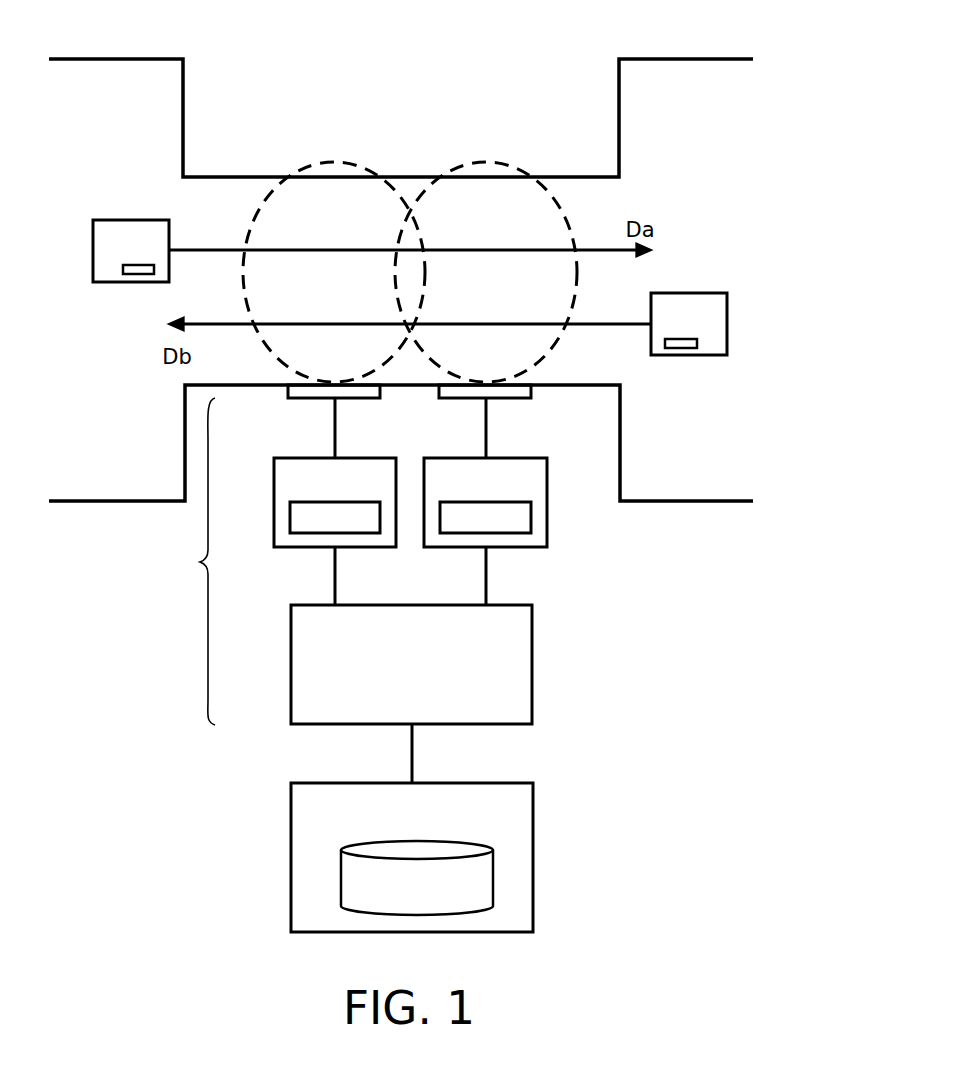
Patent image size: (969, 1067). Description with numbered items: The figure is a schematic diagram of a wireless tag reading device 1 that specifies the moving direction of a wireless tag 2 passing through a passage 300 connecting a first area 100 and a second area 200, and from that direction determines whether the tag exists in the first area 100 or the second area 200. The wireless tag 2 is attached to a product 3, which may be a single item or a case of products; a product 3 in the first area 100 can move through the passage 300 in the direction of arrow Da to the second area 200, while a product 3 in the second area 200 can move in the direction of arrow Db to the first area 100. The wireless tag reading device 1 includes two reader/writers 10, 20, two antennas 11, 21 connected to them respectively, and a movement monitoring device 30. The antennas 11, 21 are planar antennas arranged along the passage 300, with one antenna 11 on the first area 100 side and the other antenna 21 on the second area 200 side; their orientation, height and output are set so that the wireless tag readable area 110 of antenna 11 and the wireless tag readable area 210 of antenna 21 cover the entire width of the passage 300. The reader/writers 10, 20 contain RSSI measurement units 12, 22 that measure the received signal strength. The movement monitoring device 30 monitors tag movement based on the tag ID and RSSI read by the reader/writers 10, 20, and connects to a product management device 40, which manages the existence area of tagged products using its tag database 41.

The wireless tag reading device 1 is at (196, 561).
The wireless tag 2 is at (136, 275).
The product 3 is at (101, 220).
The reader/writer 10 is at (274, 470).
The antenna 11 is at (290, 398).
The RSSI measurement unit 12 is at (290, 516).
The reader/writer 20 is at (547, 470).
The antenna 21 is at (531, 398).
The RSSI measurement unit 22 is at (531, 516).
The movement monitoring device 30 is at (291, 620).
The product management device 40 is at (291, 797).
The tag database 41 is at (342, 870).
The first area 100 is at (128, 58).
The second area 200 is at (677, 58).
The wireless tag readable area 110 is at (333, 160).
The wireless tag readable area 210 is at (485, 160).
The passage 300 is at (410, 176).